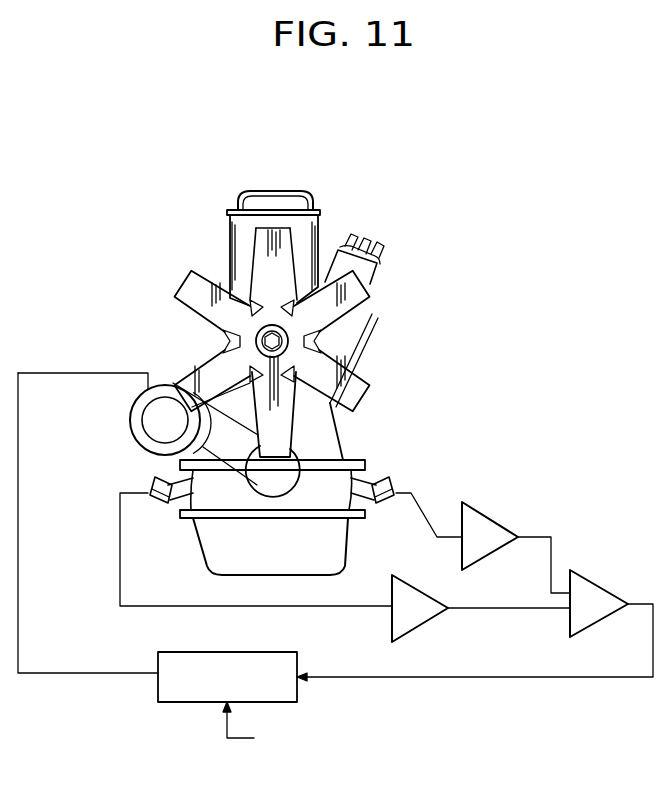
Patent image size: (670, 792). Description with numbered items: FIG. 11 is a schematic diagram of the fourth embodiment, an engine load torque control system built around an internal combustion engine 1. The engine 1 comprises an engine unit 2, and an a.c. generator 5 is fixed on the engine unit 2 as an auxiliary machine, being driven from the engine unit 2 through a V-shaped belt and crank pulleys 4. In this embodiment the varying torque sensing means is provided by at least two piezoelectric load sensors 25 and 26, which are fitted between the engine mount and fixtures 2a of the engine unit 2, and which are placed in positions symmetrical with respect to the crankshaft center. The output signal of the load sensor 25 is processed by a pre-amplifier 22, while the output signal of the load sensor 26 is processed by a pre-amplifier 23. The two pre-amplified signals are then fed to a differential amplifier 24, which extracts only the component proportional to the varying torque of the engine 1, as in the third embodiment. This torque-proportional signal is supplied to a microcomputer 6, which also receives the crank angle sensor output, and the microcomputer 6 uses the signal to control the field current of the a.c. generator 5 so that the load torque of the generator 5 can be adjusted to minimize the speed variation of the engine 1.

The internal combustion engine 1 is at (322, 228).
The engine unit 2 is at (328, 448).
The fixtures 2a is at (157, 483).
The crank pulleys 4 is at (163, 450).
The a.c. generator 5 is at (132, 415).
The microcomputer 6 is at (298, 695).
The pre-amplifier 22 is at (500, 518).
The pre-amplifier 23 is at (433, 623).
The differential amplifier 24 is at (600, 583).
The piezoelectric load sensor 25 is at (388, 505).
The piezoelectric load sensor 26 is at (158, 505).